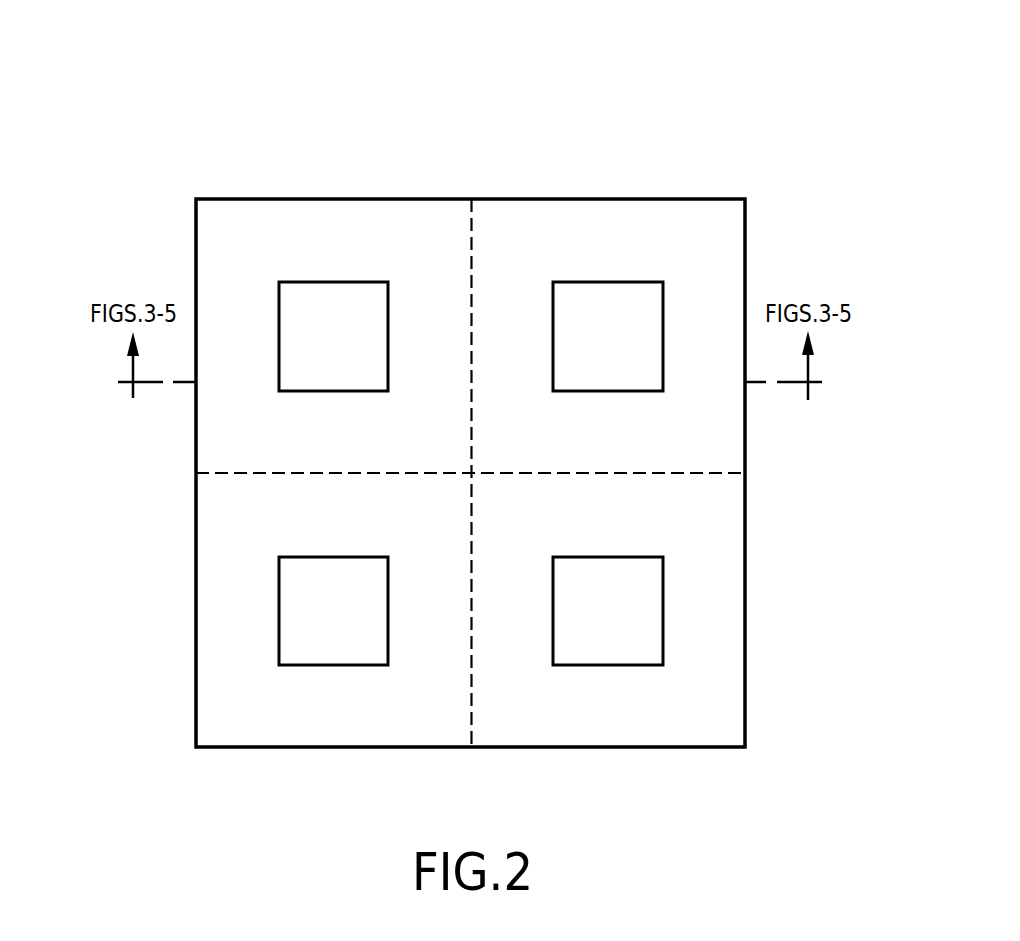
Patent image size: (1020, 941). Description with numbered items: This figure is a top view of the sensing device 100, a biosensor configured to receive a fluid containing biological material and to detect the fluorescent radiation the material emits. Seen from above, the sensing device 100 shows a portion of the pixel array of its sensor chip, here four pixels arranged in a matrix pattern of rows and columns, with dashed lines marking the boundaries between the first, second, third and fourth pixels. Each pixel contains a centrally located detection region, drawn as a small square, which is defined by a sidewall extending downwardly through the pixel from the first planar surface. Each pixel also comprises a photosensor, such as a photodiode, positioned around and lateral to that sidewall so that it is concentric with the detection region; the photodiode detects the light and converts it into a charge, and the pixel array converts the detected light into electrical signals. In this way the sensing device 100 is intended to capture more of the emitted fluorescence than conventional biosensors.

The sensing device 100 is at (148, 131).